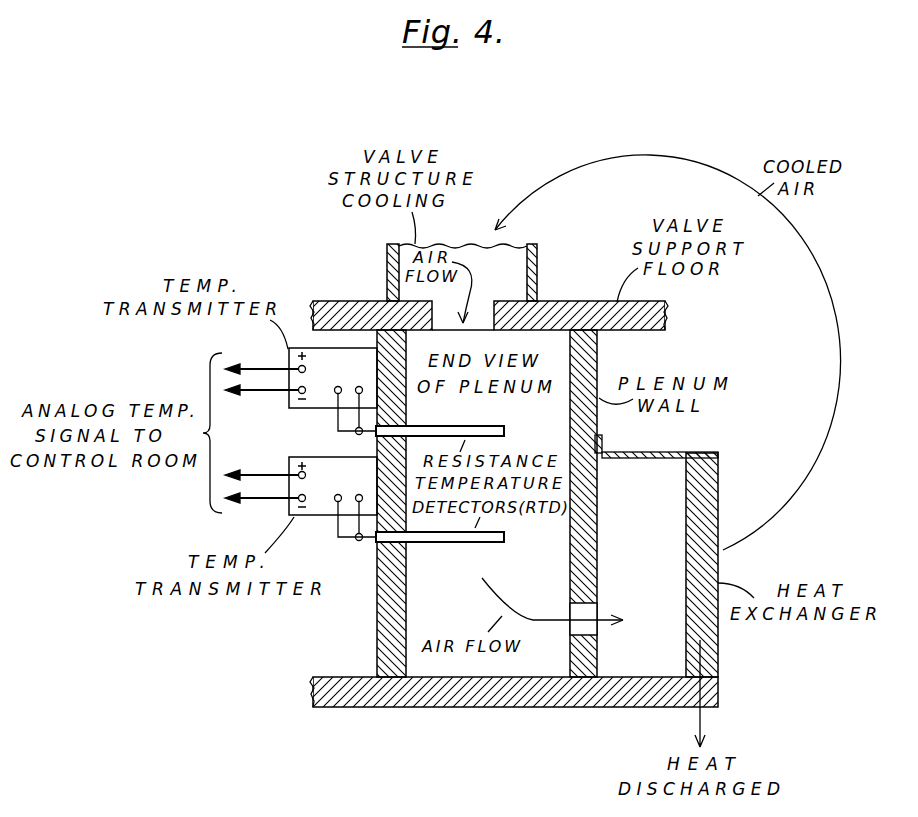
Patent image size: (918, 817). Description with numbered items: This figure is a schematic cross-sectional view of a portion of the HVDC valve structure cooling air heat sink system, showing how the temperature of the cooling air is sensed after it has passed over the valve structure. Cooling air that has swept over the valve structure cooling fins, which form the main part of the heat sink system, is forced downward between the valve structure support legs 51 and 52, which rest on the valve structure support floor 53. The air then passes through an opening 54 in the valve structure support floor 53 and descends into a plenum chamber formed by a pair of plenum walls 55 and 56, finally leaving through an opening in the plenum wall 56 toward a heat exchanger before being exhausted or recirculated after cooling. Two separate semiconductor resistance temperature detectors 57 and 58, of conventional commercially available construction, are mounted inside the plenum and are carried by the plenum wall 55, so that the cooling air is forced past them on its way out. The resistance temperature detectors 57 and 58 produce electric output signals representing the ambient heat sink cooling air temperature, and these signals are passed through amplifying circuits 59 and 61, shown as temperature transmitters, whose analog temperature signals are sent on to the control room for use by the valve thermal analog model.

The valve structure support leg 51 is at (389, 262).
The valve structure support leg 52 is at (533, 255).
The valve structure support floor 53 is at (337, 303).
The opening 54 is at (482, 308).
The plenum wall 55 is at (386, 624).
The plenum wall 56 is at (598, 548).
The resistance temperature detector 57 is at (505, 430).
The resistance temperature detector 58 is at (451, 543).
The amplifying circuit 59 is at (289, 402).
The amplifying circuit 61 is at (289, 462).